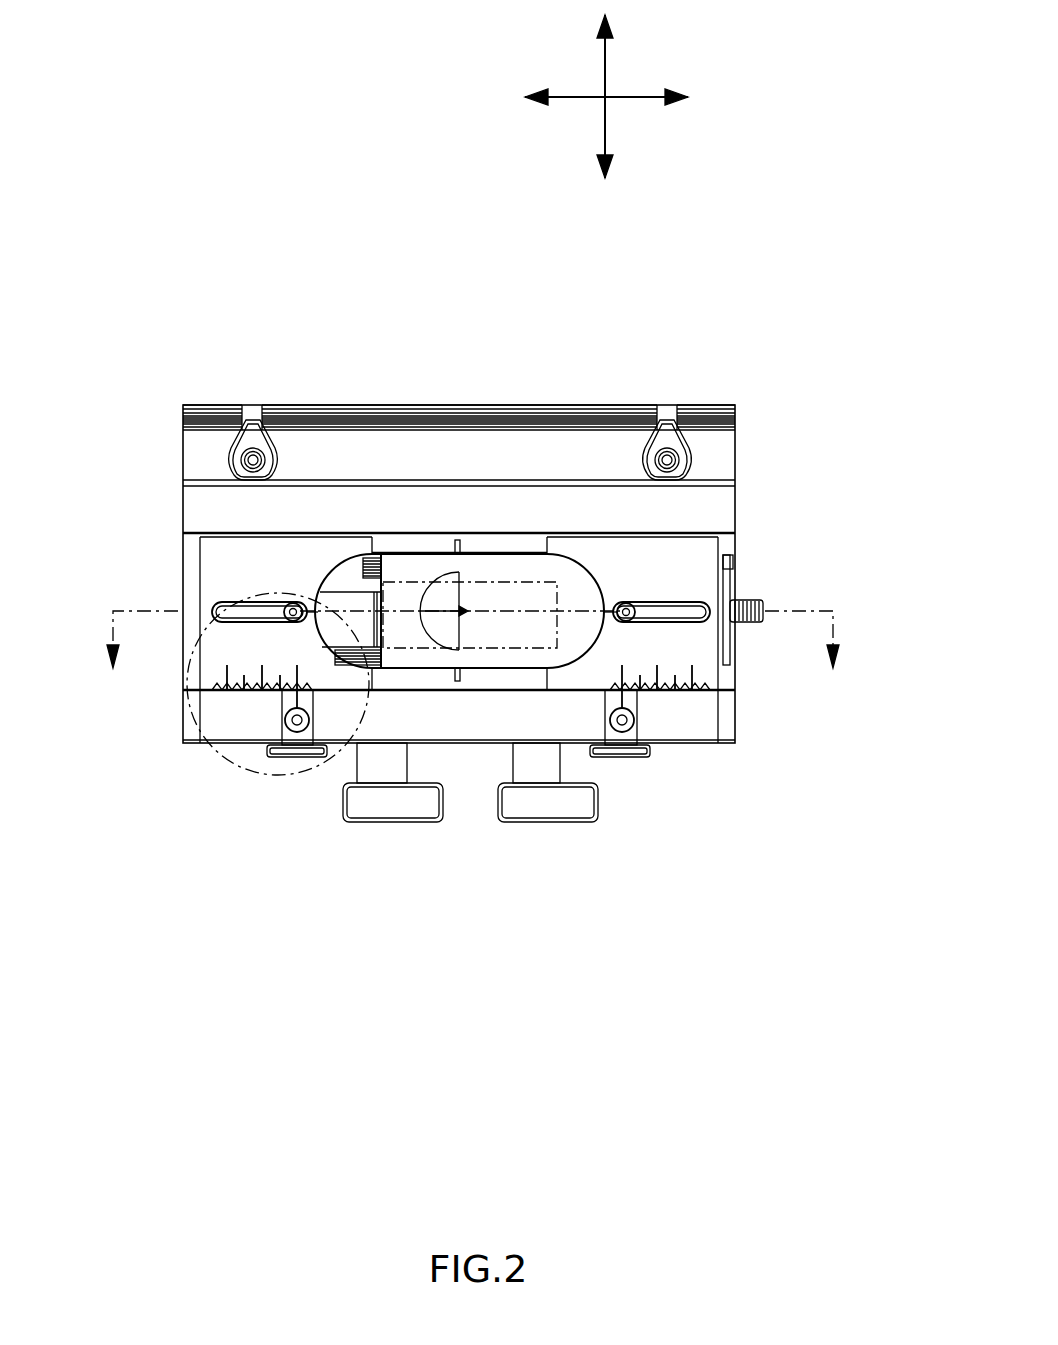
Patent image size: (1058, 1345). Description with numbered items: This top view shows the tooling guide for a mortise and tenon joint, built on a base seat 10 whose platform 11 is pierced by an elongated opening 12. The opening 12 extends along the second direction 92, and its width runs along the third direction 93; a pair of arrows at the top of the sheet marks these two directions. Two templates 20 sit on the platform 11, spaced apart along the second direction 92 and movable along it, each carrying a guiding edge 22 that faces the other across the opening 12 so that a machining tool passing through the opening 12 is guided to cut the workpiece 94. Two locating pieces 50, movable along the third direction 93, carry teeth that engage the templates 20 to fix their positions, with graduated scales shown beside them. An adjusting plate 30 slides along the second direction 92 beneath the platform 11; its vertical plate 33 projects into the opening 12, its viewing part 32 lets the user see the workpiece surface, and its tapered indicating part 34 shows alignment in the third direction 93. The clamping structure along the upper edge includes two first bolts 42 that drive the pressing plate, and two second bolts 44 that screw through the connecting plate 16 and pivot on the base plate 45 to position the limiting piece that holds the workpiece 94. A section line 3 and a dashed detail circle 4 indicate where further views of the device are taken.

The section line 3- 3 is at (473, 658).
The detail circle of FIG. 4 is at (187, 745).
The base seat 10 is at (240, 745).
The platform 11 is at (737, 735).
The opening 12 is at (488, 537).
The connecting plate 16 is at (737, 465).
The templates 20 is at (683, 533).
The guiding edge 22 is at (572, 562).
The adjusting plate 30 is at (495, 670).
The viewing part 32 is at (447, 576).
The vertical plate 33 is at (372, 608).
The indicating part 34 is at (456, 572).
The first bolts 42 is at (385, 822).
The second bolts 44 is at (232, 460).
The base plate 45 is at (500, 405).
The locating pieces 50 is at (297, 758).
The second direction 92 is at (635, 96).
The third direction 93 is at (605, 70).
The workpiece 94 is at (417, 640).